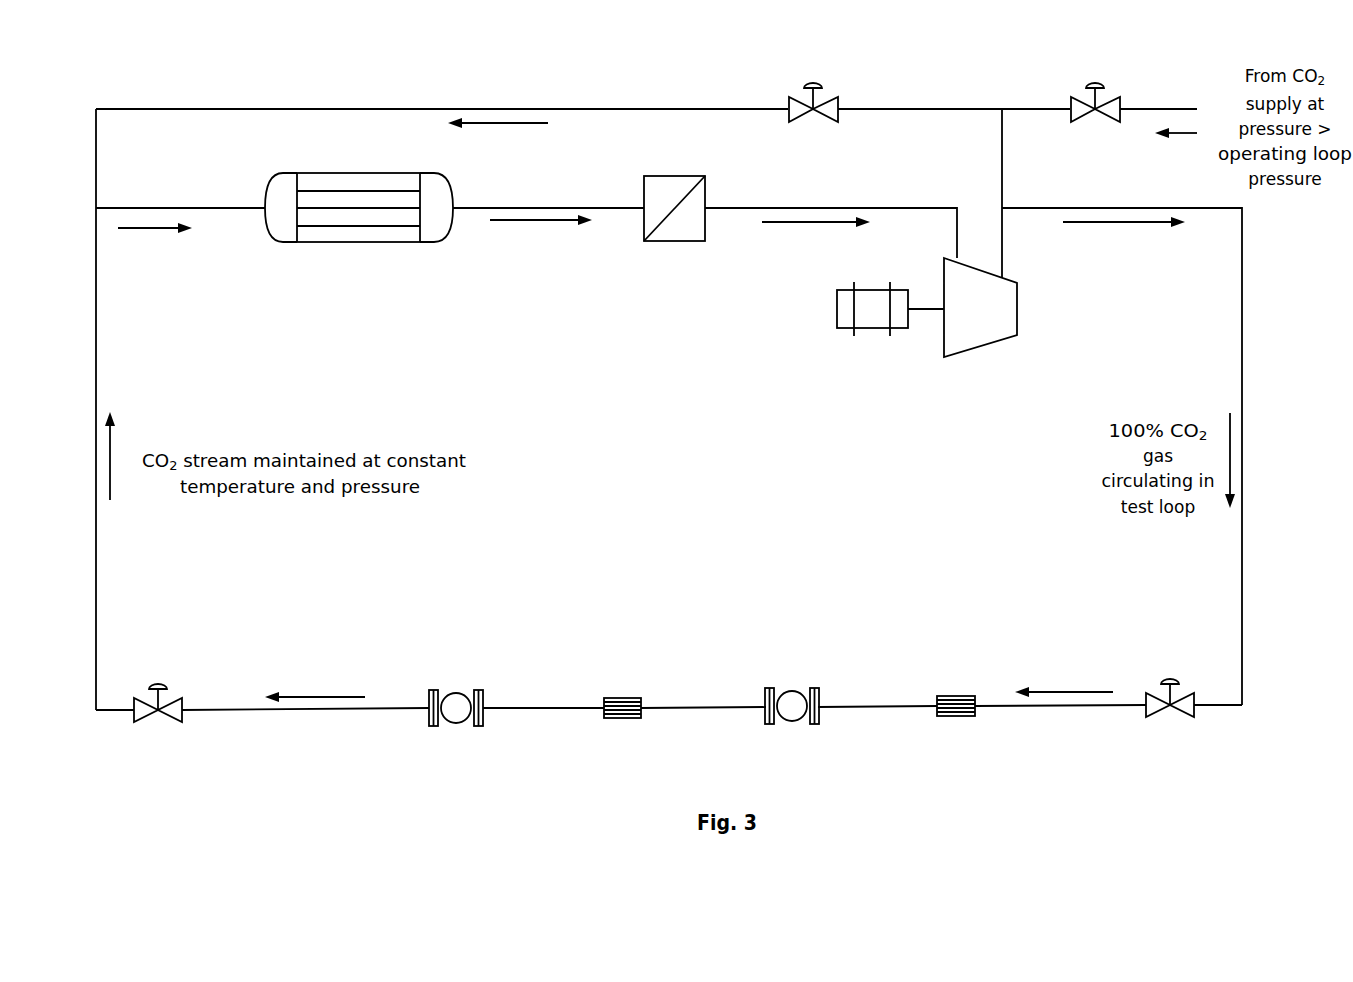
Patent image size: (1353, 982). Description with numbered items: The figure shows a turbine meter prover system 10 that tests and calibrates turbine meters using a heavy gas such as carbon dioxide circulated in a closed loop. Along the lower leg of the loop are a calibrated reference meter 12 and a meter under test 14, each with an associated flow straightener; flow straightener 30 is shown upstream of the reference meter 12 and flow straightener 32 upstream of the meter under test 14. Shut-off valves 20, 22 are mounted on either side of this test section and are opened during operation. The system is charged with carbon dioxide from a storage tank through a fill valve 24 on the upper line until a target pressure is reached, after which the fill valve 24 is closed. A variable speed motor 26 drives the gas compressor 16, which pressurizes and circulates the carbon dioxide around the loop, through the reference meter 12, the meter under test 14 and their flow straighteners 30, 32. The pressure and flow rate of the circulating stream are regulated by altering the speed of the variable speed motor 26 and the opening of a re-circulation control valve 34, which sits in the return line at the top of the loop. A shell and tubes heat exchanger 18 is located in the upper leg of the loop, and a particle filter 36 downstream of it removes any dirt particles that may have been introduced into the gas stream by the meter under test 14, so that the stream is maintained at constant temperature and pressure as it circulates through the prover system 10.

The prover system 10 is at (1064, 820).
The calibrated reference meter 12 is at (790, 741).
The meter under test 14 is at (456, 746).
The gas compressor 16 is at (1048, 303).
The heat exchanger 18 is at (362, 266).
The shut-off valve 20 is at (1170, 739).
The shut-off valve 22 is at (158, 746).
The fill valve 24 is at (1093, 128).
The variable speed motor 26 is at (803, 307).
The flow straightener 30 is at (957, 734).
The flow straightener 32 is at (624, 736).
The re-circulation control valve 34 is at (815, 129).
The particle filter 36 is at (673, 259).